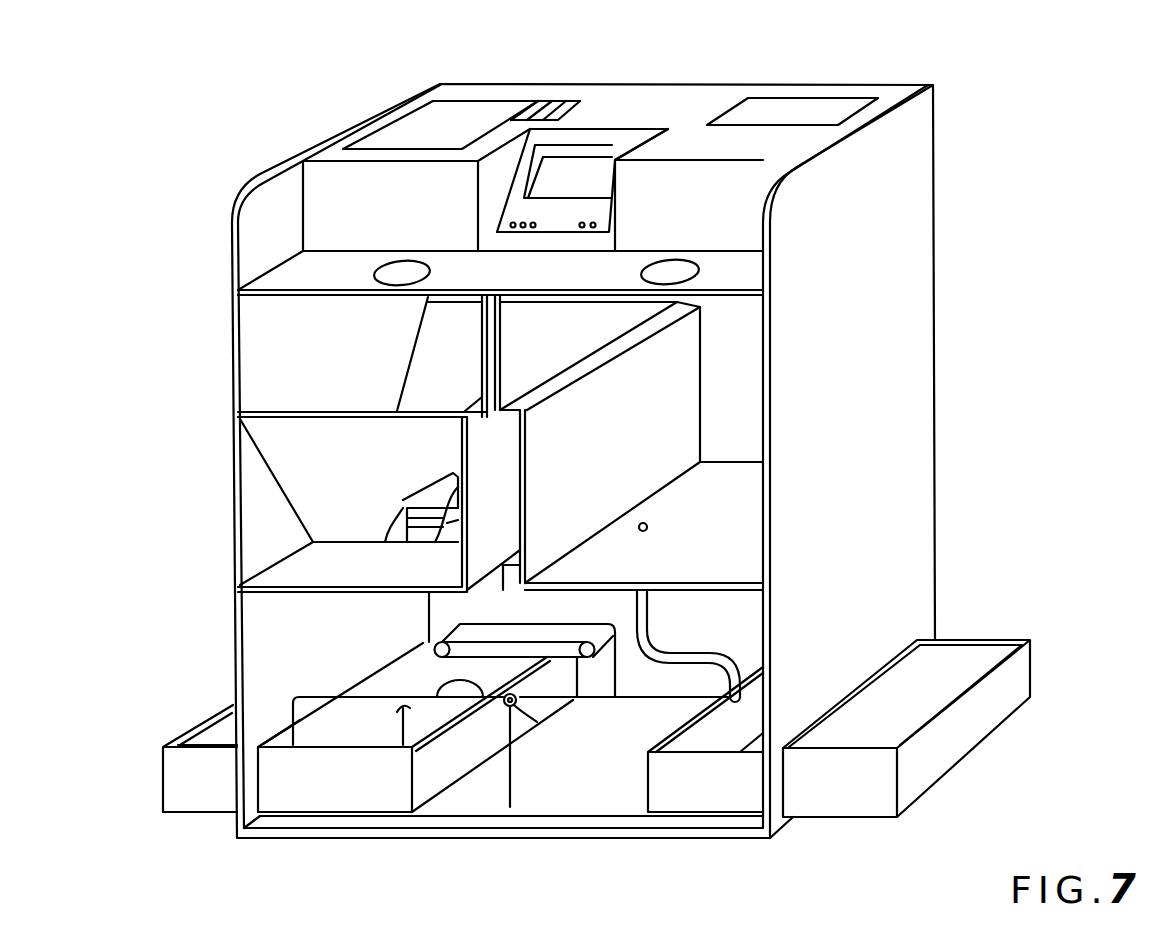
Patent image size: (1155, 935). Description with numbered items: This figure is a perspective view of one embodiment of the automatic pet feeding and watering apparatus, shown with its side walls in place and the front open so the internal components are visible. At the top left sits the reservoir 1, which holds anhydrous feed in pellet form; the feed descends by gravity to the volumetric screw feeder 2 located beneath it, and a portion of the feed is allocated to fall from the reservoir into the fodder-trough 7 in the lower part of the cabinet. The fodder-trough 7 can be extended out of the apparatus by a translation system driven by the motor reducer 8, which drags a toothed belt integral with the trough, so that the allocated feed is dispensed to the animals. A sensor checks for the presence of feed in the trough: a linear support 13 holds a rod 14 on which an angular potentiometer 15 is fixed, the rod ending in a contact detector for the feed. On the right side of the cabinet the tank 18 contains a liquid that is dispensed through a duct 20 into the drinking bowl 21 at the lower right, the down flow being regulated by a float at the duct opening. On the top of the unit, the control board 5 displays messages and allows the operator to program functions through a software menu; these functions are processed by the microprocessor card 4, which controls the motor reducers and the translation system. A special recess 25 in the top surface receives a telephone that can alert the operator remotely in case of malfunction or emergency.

The reservoir 1 is at (245, 372).
The volumetric screw feeder 2 is at (425, 523).
The microprocessor card 4 is at (397, 130).
The control board 5 is at (610, 133).
The fodder-trough 7 is at (217, 732).
The motor reducer 8 is at (533, 630).
The linear support 13 is at (513, 775).
The rod 14 is at (385, 695).
The angular potentiometer 15 is at (518, 703).
The tank 18 is at (747, 372).
The duct 20 is at (677, 648).
The drinking bowl 21 is at (953, 663).
The special recess 25 is at (812, 105).